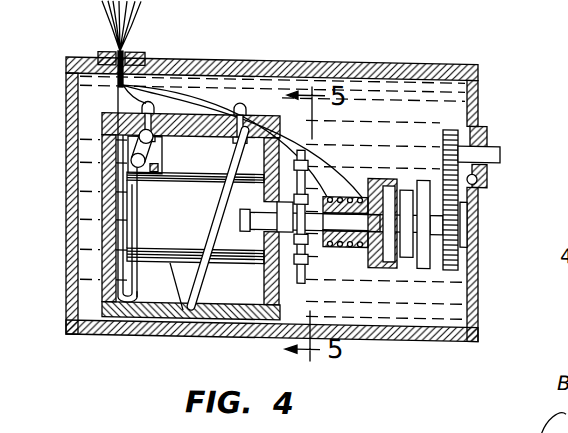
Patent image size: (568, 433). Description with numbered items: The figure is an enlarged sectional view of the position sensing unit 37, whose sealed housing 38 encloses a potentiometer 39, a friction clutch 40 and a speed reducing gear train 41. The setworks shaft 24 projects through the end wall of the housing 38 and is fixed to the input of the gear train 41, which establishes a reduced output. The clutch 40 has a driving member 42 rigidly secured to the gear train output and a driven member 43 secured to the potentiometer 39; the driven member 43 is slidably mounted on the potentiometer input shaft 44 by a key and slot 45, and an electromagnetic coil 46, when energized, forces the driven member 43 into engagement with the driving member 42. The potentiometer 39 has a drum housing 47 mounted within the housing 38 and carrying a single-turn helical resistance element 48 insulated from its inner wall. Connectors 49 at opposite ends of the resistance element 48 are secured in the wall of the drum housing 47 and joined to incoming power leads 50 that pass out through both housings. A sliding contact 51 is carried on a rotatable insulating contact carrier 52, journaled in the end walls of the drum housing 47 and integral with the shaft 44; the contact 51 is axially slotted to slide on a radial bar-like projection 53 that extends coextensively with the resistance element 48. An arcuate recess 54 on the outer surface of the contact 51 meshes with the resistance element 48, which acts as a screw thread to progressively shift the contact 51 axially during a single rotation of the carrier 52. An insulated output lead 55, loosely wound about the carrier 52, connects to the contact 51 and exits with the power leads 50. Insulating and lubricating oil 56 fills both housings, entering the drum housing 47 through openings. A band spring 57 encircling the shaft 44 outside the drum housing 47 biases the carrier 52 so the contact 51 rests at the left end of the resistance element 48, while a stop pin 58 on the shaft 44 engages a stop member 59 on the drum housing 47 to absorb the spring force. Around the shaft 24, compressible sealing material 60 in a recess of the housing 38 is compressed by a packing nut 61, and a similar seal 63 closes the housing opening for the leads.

The setworks shaft 24 is at (492, 142).
The position sensing unit 37 is at (272, 178).
The sealed housing 38 is at (443, 60).
The potentiometer 39 is at (87, 314).
The friction clutch 40 is at (403, 267).
The speed reducing gear train 41 is at (438, 165).
The driving member 42 is at (425, 264).
The driven member 43 is at (379, 264).
The input shaft 44 is at (317, 236).
The key and slot 45 is at (360, 240).
The electromagnetic coil 46 is at (362, 193).
The drum housing 47 is at (207, 318).
The single-turn helical resistance element 48 is at (195, 218).
The connectors 49 is at (235, 103).
The incoming power leads 50 is at (142, 101).
The sliding contact 51 is at (157, 152).
The contact carrier 52 is at (157, 257).
The radial bar-like projection 53 is at (203, 171).
The arcuate recess 54 is at (143, 166).
The insulated output lead 55 is at (137, 291).
The insulating and lubricating oil 56 is at (457, 96).
The band spring 57 is at (302, 280).
The stop pin 58 is at (262, 203).
The stop member 59 is at (264, 238).
The compressible sealing material 60 is at (478, 176).
The packing nut 61 is at (486, 119).
The seal 63 is at (138, 50).